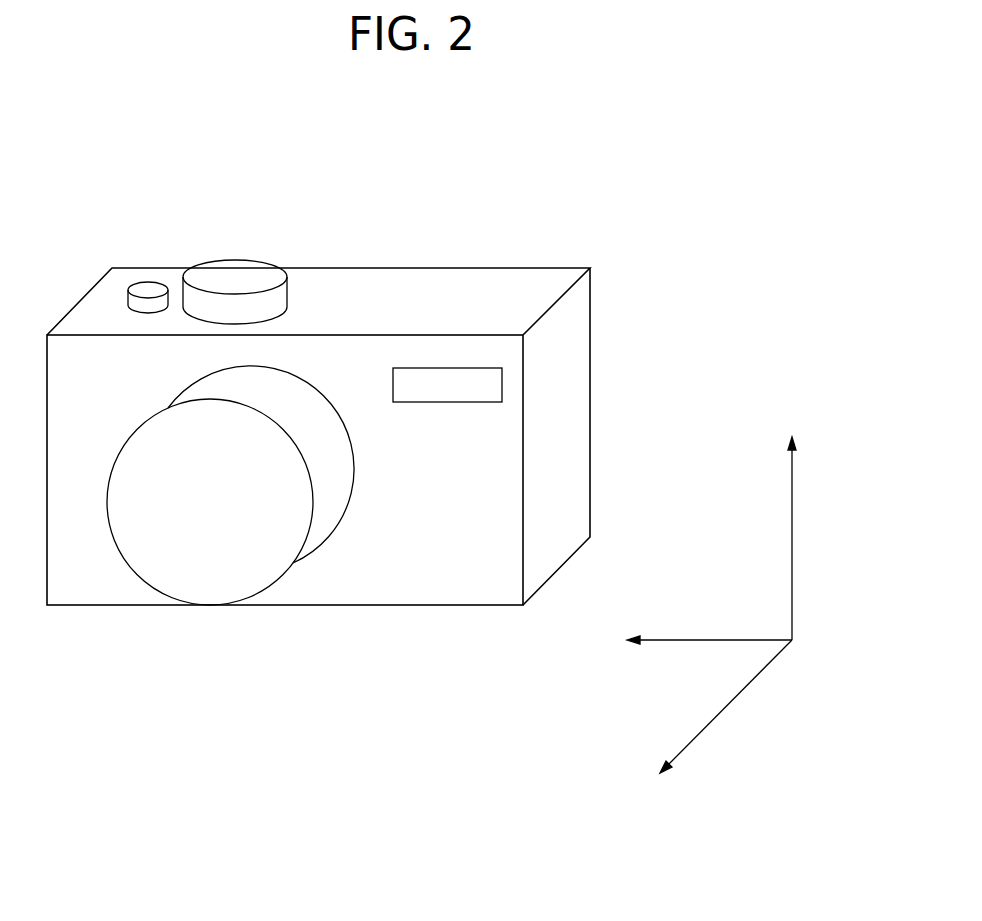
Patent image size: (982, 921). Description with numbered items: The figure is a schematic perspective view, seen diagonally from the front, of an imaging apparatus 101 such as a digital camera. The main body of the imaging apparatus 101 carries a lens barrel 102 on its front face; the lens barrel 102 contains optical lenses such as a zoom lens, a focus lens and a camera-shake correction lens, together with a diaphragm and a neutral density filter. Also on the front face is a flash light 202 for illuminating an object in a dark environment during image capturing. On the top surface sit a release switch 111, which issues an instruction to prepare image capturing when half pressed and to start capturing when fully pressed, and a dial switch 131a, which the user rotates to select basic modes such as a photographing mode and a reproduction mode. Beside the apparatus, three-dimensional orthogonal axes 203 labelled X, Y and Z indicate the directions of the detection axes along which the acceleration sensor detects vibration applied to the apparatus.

The imaging apparatus 101 is at (493, 278).
The release switch 111 is at (148, 288).
The dial switch 131a is at (232, 281).
The lens barrel 102 is at (210, 592).
The flash light 202 is at (448, 392).
The three-dimensional orthogonal axes 203 is at (792, 552).